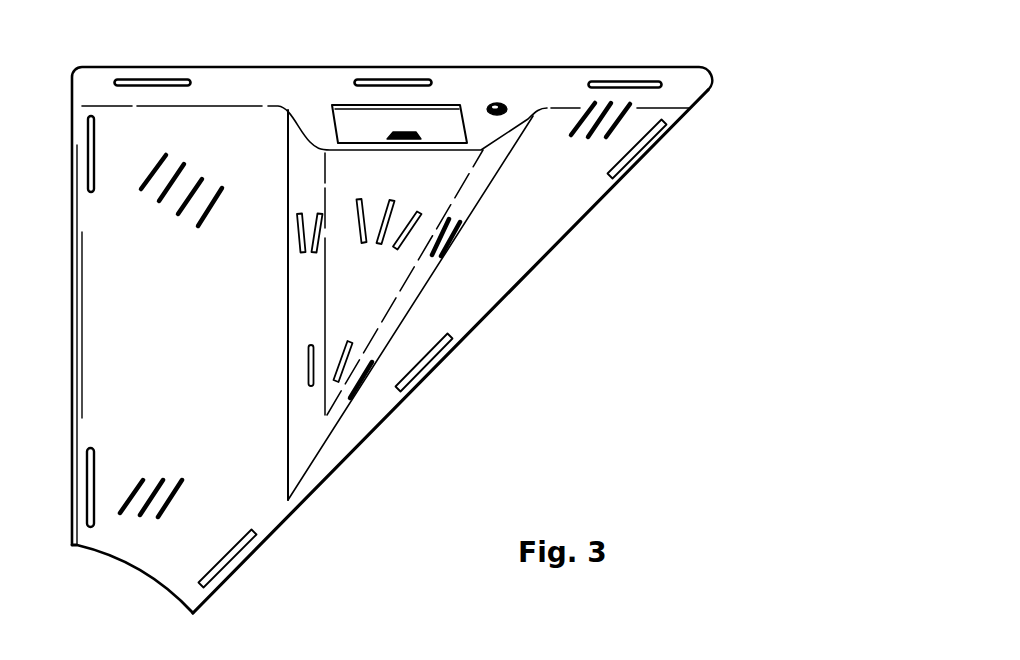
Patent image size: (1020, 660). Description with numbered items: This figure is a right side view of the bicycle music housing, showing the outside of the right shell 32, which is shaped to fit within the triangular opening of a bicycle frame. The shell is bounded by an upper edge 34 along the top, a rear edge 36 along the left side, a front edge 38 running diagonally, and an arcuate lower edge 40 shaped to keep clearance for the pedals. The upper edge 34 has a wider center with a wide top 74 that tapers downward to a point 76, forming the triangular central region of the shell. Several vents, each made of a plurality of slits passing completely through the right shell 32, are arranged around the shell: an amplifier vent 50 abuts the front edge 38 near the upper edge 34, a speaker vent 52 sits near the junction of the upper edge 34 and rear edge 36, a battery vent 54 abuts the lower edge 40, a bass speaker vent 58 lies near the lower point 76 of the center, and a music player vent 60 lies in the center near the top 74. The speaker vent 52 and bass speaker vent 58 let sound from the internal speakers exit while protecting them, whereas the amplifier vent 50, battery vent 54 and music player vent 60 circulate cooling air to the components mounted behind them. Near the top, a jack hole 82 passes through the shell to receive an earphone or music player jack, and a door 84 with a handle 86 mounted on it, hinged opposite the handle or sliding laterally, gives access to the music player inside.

The right shell 32 is at (560, 86).
The upper edge 34 is at (360, 67).
The rear edge 36 is at (73, 277).
The front edge 38 is at (497, 310).
The lower edge 40 is at (118, 560).
The amplifier vent 50 is at (613, 108).
The speaker vent 52 is at (185, 181).
The battery vent 54 is at (153, 498).
The bass speaker vent 58 is at (348, 350).
The music player vent 60 is at (387, 212).
The top 74 is at (475, 117).
The point 76 is at (293, 506).
The jack hole 82 is at (500, 105).
The door 84 is at (375, 122).
The handle 86 is at (410, 132).